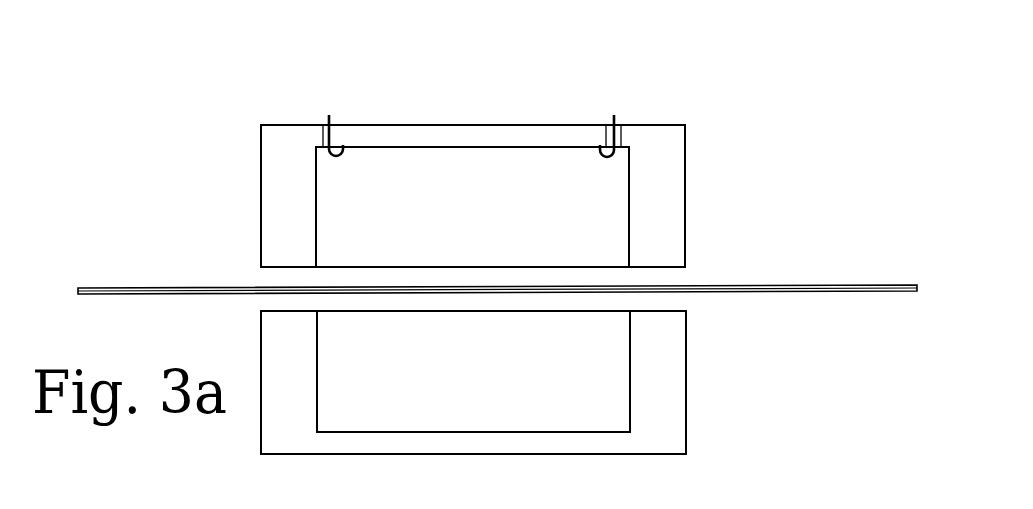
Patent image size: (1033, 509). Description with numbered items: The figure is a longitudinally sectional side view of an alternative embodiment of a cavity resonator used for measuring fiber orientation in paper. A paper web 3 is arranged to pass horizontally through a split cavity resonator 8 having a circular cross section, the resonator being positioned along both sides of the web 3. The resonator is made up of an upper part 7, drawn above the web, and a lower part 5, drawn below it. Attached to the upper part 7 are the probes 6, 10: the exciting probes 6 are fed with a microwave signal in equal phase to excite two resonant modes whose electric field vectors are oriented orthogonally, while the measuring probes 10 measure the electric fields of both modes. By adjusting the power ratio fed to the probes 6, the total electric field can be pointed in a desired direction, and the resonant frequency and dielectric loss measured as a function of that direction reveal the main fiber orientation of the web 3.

The split cavity resonator 8 is at (230, 107).
The upper part 7 is at (629, 250).
The exciting probes 6 is at (339, 150).
The measuring probes 10 is at (594, 162).
The paper web 3 is at (200, 285).
The lower part 5 is at (630, 372).